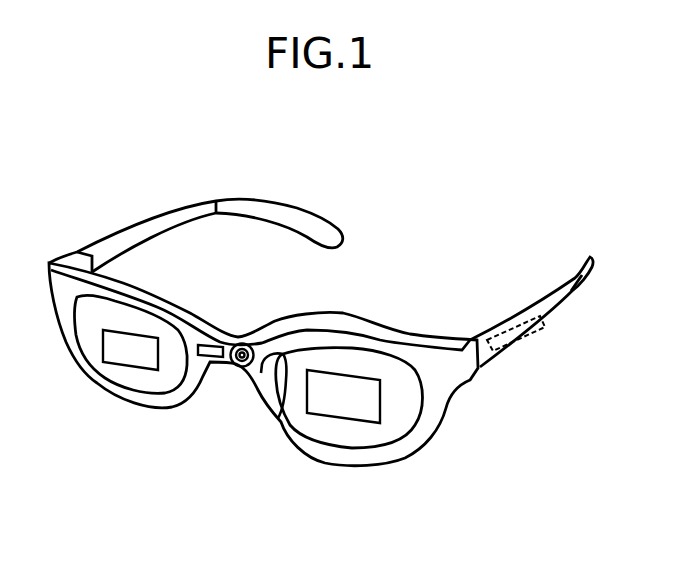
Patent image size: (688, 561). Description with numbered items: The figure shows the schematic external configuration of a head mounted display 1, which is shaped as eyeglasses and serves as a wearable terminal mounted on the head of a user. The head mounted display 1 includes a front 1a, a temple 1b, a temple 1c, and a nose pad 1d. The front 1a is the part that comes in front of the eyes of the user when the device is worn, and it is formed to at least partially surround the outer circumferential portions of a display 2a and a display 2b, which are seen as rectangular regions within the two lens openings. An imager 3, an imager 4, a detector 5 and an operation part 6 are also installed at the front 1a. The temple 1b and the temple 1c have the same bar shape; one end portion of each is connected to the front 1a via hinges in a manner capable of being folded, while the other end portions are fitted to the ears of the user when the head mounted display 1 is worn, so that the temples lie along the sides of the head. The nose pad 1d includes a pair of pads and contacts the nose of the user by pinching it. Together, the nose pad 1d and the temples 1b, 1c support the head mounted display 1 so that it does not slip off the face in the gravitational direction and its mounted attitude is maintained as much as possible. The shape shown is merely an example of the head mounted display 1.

The head mounted display 1 is at (451, 201).
The front 1a is at (371, 328).
The temple 1b is at (167, 218).
The temple 1c is at (545, 308).
The nose pad 1d is at (273, 388).
The display 2a is at (130, 355).
The display 2b is at (340, 413).
The imager 3 is at (240, 367).
The imager 4 is at (425, 342).
The detector 5 is at (217, 358).
The operation part 6 is at (512, 323).